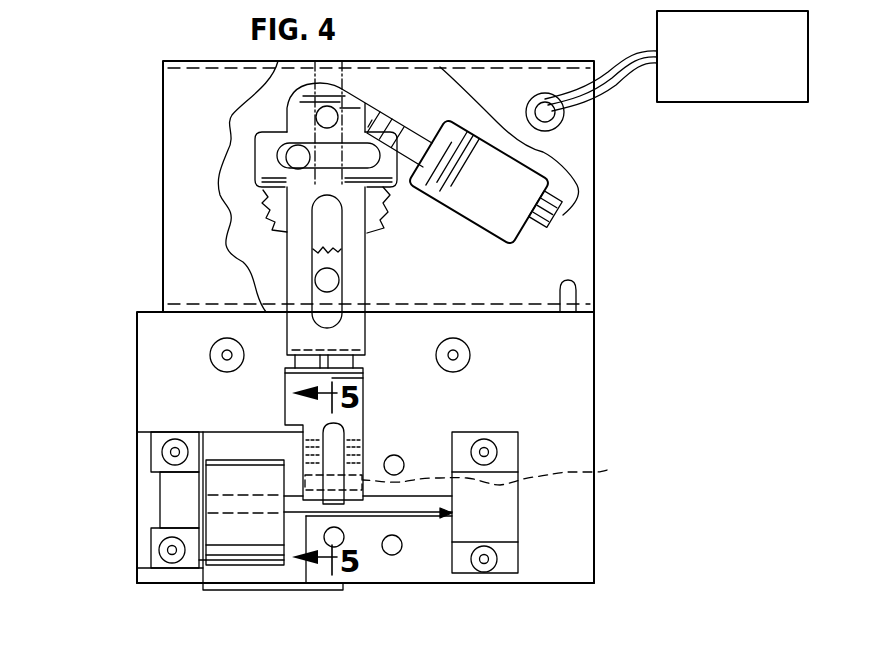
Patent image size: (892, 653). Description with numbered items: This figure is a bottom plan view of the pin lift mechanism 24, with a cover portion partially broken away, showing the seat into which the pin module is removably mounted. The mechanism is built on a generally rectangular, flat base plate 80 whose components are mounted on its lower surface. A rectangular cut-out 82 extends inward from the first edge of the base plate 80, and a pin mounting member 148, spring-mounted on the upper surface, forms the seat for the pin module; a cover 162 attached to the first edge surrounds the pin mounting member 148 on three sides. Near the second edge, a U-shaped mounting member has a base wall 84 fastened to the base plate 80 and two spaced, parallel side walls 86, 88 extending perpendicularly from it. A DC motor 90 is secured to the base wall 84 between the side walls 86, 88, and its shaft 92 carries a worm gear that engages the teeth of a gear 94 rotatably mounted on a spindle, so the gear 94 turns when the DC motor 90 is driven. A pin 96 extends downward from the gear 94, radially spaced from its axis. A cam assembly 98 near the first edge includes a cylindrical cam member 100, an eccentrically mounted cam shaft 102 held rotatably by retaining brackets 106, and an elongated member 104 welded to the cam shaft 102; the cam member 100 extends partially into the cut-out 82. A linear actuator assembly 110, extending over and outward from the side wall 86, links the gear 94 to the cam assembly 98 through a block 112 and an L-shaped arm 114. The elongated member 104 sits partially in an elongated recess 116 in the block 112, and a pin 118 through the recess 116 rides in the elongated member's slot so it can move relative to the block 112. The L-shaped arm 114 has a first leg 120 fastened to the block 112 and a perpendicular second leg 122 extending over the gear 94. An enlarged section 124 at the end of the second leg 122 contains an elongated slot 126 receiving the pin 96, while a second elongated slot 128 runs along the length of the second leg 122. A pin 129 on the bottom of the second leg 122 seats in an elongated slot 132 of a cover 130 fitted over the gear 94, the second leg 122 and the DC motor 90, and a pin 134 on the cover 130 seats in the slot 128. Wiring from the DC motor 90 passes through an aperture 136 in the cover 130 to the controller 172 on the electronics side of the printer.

The pin lift mechanism 24 is at (158, 132).
The base plate 80 is at (577, 432).
The rectangular cut-out 82 is at (202, 590).
The base wall 84 is at (365, 295).
The side wall 86 is at (603, 317).
The side wall 88 is at (293, 62).
The DC motor 90 is at (462, 133).
The shaft 92 is at (398, 112).
The gear 94 is at (233, 207).
The pin 96 is at (298, 157).
The cam assembly 98 is at (428, 556).
The cylindrical cam member 100 is at (220, 530).
The cam shaft 102 is at (518, 514).
The elongated member 104 is at (342, 453).
The retaining brackets 106 is at (165, 494).
The linear actuator assembly 110 is at (270, 395).
The block 112 is at (285, 410).
The L-shaped arm 114 is at (368, 333).
The elongated recess 116 is at (365, 435).
The pin 118 is at (473, 475).
The first leg 120 is at (365, 370).
The second leg 122 is at (287, 328).
The enlarged section 124 is at (365, 222).
The elongated slot 126 is at (552, 220).
The second elongated slot 128 is at (576, 283).
The pin 129 is at (325, 117).
The cover 130 is at (182, 253).
The elongated slot 132 is at (356, 73).
The pin 134 is at (322, 280).
The aperture 136 is at (545, 93).
The pin mounting member 148 is at (198, 559).
The cover 162 is at (240, 592).
The controller 172 is at (657, 12).